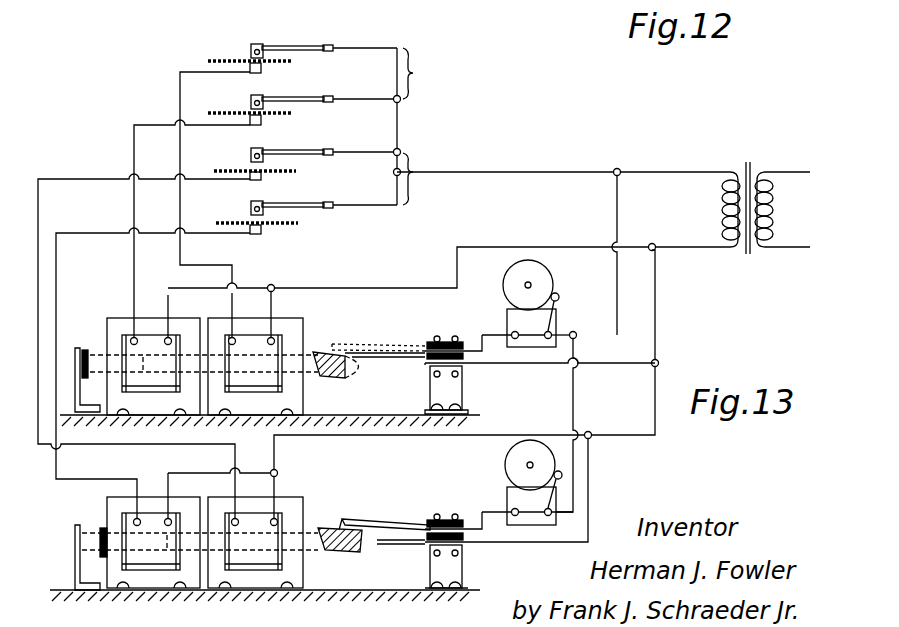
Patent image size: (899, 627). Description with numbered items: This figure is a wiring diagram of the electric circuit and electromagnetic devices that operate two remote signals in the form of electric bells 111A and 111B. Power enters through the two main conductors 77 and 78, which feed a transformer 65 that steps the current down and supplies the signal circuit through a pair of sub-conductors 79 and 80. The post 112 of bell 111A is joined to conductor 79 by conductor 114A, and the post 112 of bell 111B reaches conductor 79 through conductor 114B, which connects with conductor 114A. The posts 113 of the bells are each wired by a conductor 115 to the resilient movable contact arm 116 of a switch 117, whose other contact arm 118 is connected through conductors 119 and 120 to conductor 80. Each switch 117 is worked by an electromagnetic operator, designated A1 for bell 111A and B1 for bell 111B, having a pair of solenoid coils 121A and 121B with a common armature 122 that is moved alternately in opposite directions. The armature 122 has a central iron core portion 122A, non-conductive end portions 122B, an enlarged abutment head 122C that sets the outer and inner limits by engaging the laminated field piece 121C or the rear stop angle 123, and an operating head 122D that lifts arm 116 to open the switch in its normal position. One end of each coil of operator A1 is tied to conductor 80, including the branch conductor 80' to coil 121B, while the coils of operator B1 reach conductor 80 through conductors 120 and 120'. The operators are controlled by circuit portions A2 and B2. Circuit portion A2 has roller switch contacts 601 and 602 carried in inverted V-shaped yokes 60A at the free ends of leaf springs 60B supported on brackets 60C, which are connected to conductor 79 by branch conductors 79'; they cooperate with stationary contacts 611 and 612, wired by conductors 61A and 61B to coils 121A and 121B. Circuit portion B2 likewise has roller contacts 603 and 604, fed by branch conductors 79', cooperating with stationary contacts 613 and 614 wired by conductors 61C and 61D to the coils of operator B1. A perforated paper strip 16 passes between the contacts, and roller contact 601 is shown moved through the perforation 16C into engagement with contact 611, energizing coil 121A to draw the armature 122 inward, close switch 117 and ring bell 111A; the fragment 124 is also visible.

The inverted V-shaped yoke 60A is at (255, 44).
The leaf spring 60B is at (297, 46).
The bracket 60C is at (328, 45).
The roller switch contact 602 is at (251, 48).
The roller switch contact 601 is at (251, 101).
The roller switch contact 604 is at (251, 155).
The roller switch contact 603 is at (251, 208).
The paper strip 16 is at (292, 61).
The perforation 16C is at (262, 110).
The stationary contact 612 is at (261, 72).
The stationary contact 611 is at (261, 125).
The stationary contact 614 is at (261, 180).
The stationary contact 613 is at (261, 234).
The conductor 61A is at (134, 132).
The conductor 61B is at (180, 98).
The conductor 61C is at (100, 233).
The conductor 61D is at (93, 179).
The branch conductor 79' is at (376, 114).
The sub-conductor 79 is at (567, 201).
The sub-conductor 80 is at (440, 284).
The branch conductor 80' is at (290, 312).
The circuit portion A2 is at (417, 73).
The circuit portion B2 is at (417, 179).
The electromagnetic operator A1 is at (300, 332).
The electromagnetic operator B1 is at (300, 511).
The transformer 65 is at (750, 165).
The main conductor 77 is at (800, 172).
The main conductor 78 is at (800, 247).
The conductor 114A is at (617, 210).
The conductor 114B is at (573, 400).
The electric bell 111A is at (540, 283).
The electric bell 111B is at (513, 460).
The post 112 is at (552, 332).
The post 113 is at (511, 330).
The conductor 115 is at (482, 340).
The resilient movable contact arm 116 is at (372, 345).
The switch 117 is at (470, 367).
The contact arm 118 is at (405, 360).
The conductor 119 is at (624, 363).
The conductor 120 is at (437, 384).
The conductor 120' is at (301, 476).
The solenoid coil 121A is at (153, 453).
The solenoid coil 121B is at (255, 453).
The laminated field piece 121C is at (123, 318).
The armature 122 is at (318, 370).
The iron core portion 122A is at (190, 355).
The end portion 122B is at (112, 355).
The abutment head 122C is at (95, 343).
The operating head 122D is at (345, 352).
The rear stop angle 123 is at (80, 400).
The conductor 124 is at (559, 4).